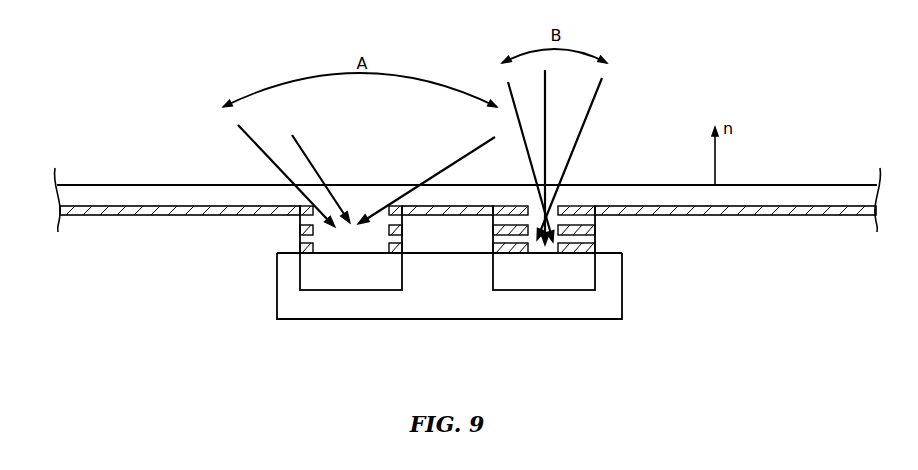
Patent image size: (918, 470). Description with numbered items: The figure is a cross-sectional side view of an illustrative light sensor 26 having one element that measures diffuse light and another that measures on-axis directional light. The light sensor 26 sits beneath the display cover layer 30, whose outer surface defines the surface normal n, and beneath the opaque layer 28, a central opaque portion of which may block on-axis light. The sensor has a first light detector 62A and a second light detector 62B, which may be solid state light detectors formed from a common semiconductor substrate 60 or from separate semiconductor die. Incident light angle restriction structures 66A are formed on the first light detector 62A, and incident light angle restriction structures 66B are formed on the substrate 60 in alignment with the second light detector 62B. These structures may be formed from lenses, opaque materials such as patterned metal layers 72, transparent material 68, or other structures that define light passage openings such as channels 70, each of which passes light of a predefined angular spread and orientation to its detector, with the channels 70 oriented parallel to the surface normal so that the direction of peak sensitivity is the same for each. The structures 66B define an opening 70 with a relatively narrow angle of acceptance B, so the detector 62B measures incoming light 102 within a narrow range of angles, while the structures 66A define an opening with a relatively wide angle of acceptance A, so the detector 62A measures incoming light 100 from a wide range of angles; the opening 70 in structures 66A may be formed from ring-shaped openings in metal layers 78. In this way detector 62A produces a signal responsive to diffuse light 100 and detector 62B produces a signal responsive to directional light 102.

The light sensor 26 is at (221, 332).
The opaque layer 28 is at (160, 210).
The display cover layer 30 is at (762, 192).
The substrate 60 is at (623, 308).
The light detector 62A is at (352, 290).
The light detector 62B is at (545, 290).
The incident light angle restriction structures 66A is at (280, 233).
The incident light angle restriction structures 66B is at (616, 234).
The transparent material 68 is at (333, 249).
The channels 70 is at (368, 217).
The patterned metal layers 72 is at (576, 228).
The metal layers 78 is at (402, 236).
The incoming light 100 is at (270, 157).
The incoming light 102 is at (518, 108).